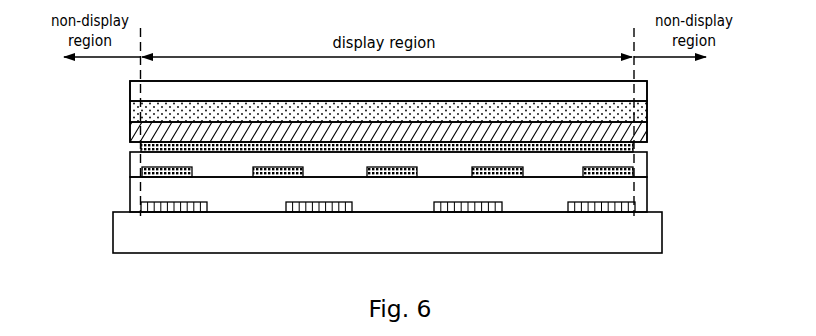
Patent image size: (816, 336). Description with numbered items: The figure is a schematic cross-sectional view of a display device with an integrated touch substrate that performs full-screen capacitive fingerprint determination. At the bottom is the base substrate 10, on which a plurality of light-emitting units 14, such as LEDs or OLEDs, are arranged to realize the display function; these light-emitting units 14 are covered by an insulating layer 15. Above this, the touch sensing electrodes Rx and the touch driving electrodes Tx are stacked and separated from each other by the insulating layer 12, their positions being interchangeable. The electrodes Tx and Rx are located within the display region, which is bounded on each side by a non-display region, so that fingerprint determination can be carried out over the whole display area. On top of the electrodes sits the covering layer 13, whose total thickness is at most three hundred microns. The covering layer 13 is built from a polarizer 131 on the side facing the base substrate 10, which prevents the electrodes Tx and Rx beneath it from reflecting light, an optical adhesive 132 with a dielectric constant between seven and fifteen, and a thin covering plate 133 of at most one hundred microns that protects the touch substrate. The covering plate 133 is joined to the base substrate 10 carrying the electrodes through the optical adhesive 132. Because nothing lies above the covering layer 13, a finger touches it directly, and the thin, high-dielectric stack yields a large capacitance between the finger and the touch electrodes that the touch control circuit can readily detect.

The base substrate 10 is at (615, 233).
The insulating layer 12 is at (148, 163).
The covering layer 13 is at (712, 95).
The polarizer 131 is at (644, 132).
The optical adhesive 132 is at (632, 112).
The covering plate 133 is at (632, 91).
The light-emitting units 14 is at (140, 209).
The insulating layer 15 is at (148, 189).
The touch driving electrodes Tx is at (636, 147).
The touch sensing electrodes Rx is at (636, 171).